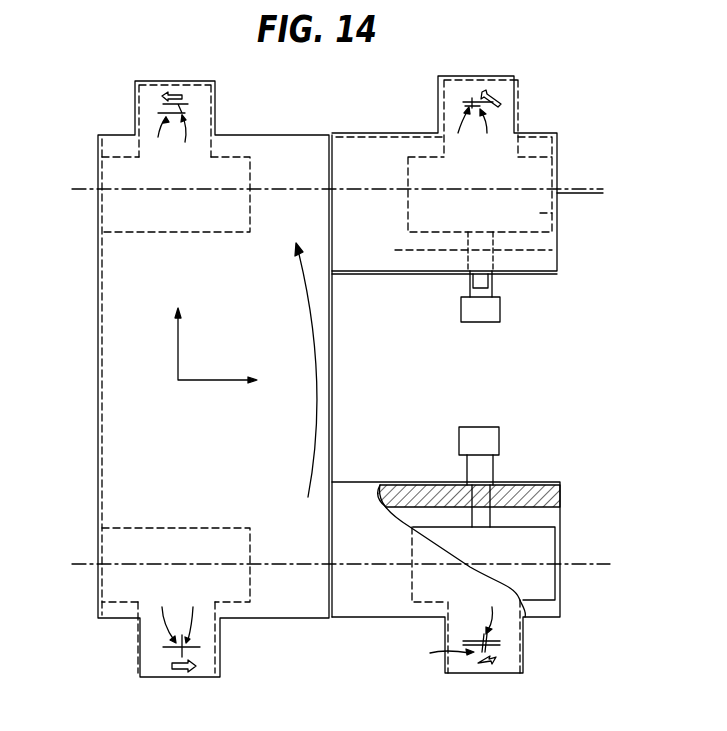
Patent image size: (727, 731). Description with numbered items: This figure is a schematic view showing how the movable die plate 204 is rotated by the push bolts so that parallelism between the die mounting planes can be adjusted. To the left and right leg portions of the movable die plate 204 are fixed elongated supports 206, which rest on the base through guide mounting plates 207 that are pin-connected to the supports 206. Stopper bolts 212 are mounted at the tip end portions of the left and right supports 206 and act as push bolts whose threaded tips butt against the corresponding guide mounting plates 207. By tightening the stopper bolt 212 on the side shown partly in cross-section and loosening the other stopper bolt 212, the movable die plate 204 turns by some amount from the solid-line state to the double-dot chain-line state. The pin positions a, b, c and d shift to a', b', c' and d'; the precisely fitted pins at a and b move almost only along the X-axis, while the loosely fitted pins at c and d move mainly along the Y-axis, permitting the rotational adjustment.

The movable die plate 204 is at (130, 473).
The support 206 is at (547, 262).
The guide mounting plate 207 is at (558, 217).
The stopper bolt 212 is at (490, 310).